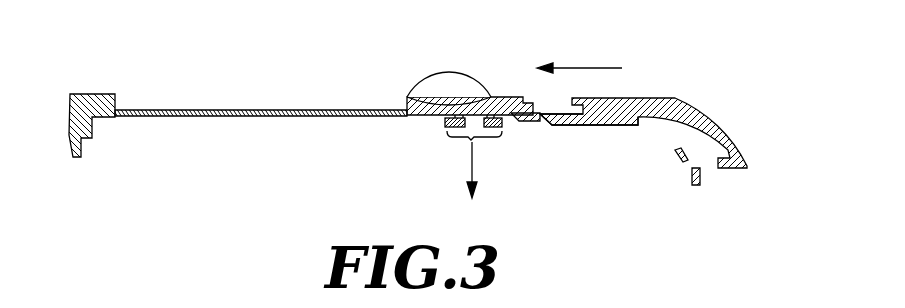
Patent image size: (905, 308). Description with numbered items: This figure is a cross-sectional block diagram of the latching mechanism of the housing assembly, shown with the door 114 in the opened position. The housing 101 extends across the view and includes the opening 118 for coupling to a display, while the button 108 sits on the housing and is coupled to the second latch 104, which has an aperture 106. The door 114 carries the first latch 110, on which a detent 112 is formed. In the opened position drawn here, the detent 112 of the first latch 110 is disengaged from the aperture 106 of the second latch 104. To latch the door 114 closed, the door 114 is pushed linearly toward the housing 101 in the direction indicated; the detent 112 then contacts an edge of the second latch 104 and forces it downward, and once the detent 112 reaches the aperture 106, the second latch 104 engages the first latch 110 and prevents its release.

The housing 101 is at (90, 93).
The second latch 104 is at (496, 117).
The aperture 106 is at (475, 123).
The button 108 is at (423, 79).
The first latch 110 is at (582, 125).
The detent 112 is at (532, 122).
The door 114 is at (692, 100).
The opening 118 is at (290, 108).